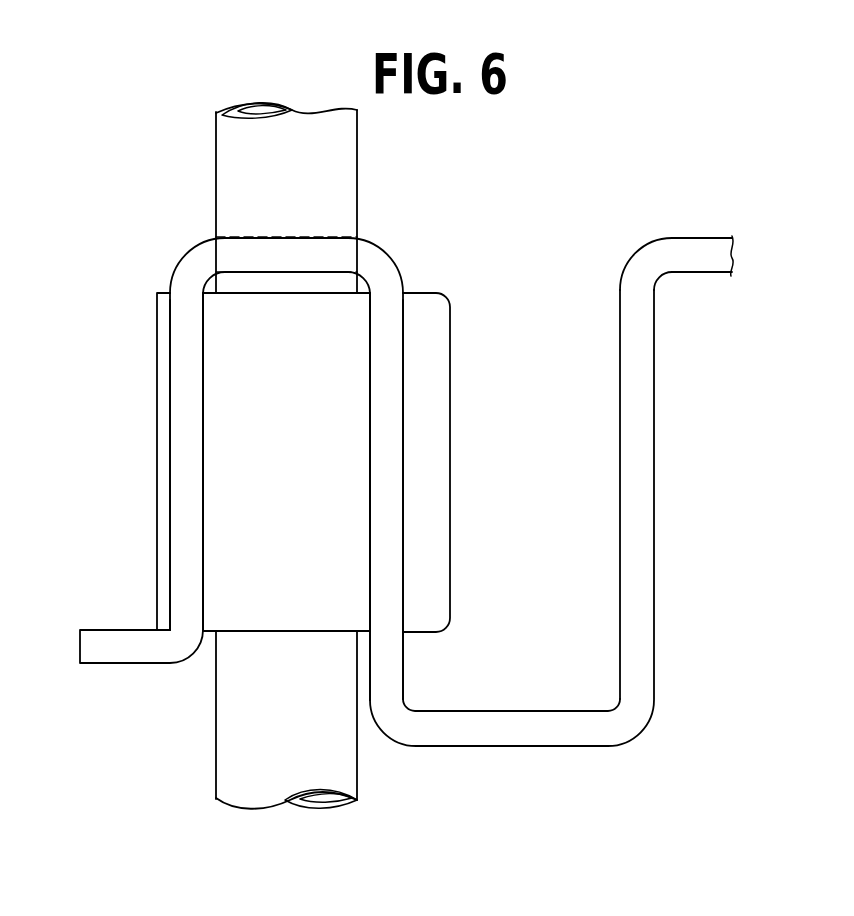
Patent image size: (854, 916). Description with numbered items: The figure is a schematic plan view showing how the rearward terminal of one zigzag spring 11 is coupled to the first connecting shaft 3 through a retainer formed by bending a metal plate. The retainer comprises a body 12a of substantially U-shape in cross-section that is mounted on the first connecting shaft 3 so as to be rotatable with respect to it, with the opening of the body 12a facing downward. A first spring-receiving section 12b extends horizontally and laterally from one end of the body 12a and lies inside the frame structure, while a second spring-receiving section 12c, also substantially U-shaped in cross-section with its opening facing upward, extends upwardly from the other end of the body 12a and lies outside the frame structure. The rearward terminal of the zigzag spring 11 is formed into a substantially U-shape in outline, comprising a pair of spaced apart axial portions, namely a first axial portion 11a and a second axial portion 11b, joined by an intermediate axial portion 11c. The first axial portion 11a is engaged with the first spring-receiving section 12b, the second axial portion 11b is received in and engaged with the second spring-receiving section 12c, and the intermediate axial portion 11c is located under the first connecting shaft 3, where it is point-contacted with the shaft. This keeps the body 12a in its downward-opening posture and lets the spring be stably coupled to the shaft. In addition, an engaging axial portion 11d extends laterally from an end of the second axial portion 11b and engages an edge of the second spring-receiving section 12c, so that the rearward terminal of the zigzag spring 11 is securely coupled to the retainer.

The first connecting shaft 3 is at (350, 187).
The zigzag spring 11 is at (553, 710).
The first axial portion 11a is at (392, 505).
The second axial portion 11b is at (185, 545).
The intermediate axial portion 11c is at (197, 255).
The engaging axial portion 11d is at (110, 653).
The body 12a is at (268, 455).
The first spring-receiving section 12b is at (433, 418).
The second spring-receiving section 12c is at (157, 322).